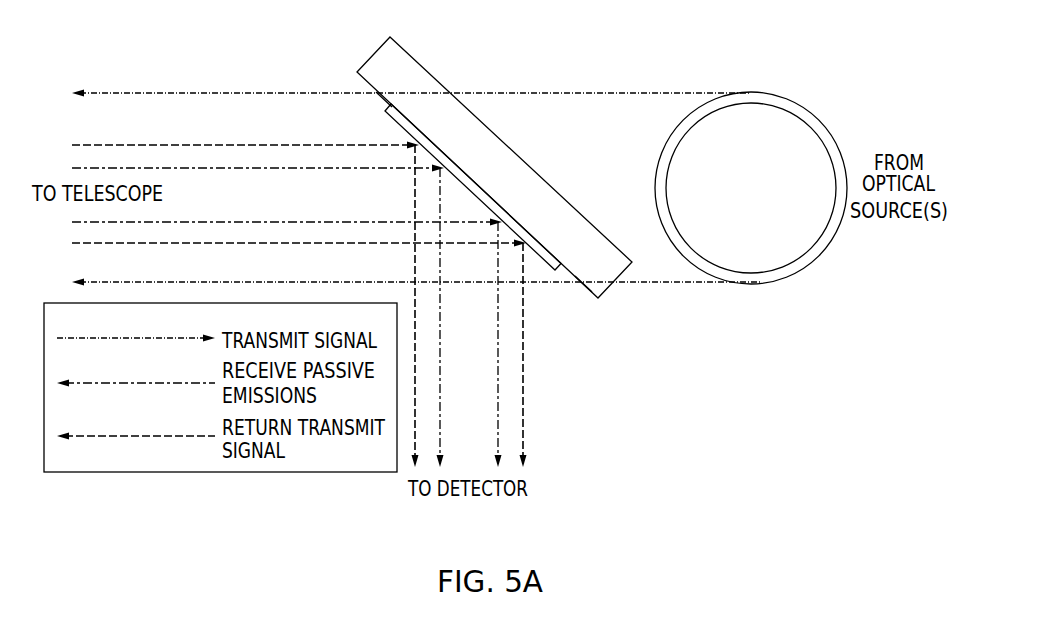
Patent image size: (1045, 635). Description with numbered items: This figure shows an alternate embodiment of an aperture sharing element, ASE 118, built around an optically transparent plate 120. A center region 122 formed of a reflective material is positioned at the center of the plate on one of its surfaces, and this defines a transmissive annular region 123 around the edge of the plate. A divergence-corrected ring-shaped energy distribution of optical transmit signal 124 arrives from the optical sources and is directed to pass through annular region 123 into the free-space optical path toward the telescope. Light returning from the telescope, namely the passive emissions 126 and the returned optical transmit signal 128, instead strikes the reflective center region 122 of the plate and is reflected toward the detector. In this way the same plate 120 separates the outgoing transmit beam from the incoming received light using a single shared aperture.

The ASE 118 is at (840, 42).
The optically transparent plate 120 is at (427, 69).
The center region 122 is at (462, 187).
The transmissive annular region 123 is at (379, 108).
The optical transmit signal 124 is at (612, 92).
The passive emissions 126 is at (268, 220).
The returned optical transmit signal 128 is at (150, 143).